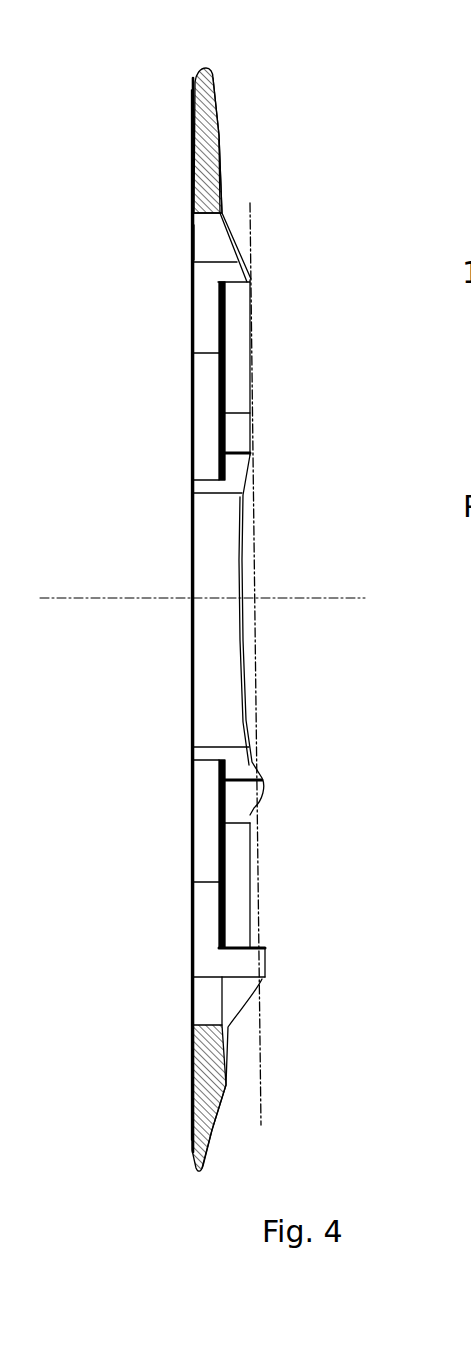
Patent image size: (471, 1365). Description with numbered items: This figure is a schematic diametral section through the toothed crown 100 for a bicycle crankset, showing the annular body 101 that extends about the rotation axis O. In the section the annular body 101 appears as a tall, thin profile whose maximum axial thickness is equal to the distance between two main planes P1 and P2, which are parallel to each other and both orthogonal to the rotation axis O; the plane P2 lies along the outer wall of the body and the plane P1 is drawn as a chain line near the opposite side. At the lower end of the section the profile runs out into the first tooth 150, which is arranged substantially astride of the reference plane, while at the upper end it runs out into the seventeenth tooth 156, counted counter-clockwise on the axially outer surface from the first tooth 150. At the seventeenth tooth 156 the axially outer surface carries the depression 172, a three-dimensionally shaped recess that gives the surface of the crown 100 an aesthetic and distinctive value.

The toothed crown 100 is at (141, 151).
The annular body 101 is at (205, 240).
The first tooth 150 is at (218, 1137).
The seventeenth tooth 156 is at (208, 70).
The depression 172 is at (216, 142).
The first main plane P1 is at (260, 610).
The second main plane P2 is at (190, 565).
The rotation axis O is at (72, 605).